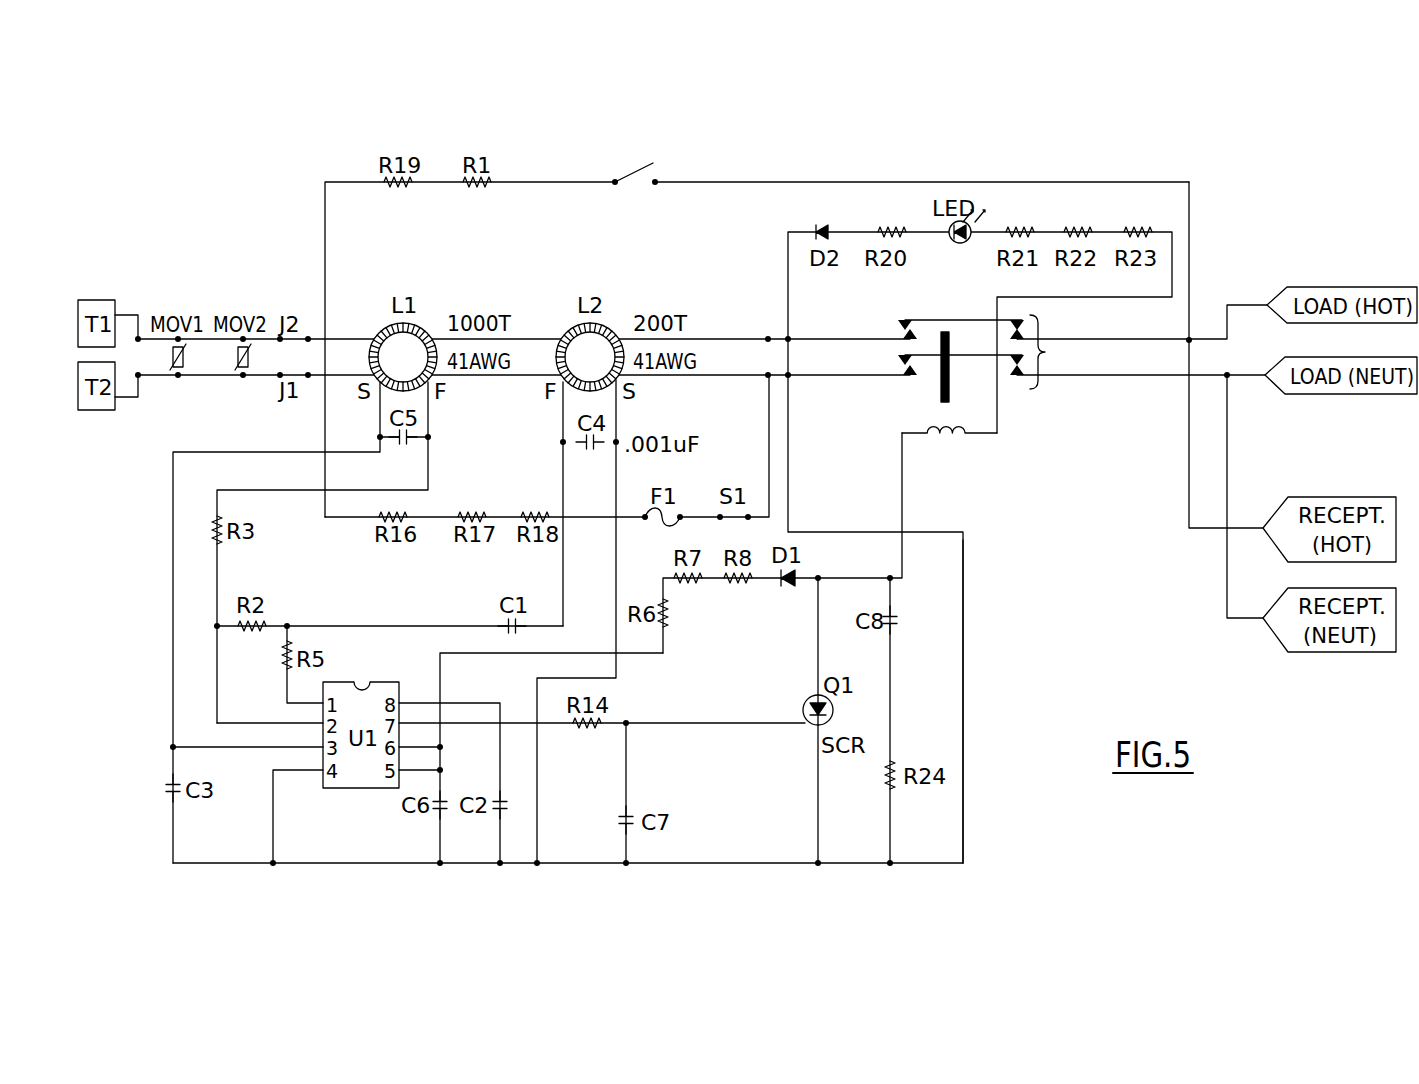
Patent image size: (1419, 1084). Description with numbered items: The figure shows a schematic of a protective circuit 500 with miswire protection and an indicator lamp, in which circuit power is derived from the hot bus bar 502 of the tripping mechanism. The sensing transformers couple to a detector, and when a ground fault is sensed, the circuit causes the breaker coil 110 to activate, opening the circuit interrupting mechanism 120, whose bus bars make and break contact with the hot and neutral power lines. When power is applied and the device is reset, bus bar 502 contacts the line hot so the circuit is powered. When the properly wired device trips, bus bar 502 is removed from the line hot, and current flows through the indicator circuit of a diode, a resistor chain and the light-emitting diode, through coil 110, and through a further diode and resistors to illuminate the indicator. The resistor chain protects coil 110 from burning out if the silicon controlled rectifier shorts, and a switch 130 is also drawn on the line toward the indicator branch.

The test switch 130 is at (634, 172).
The hot bus bar 502 is at (962, 318).
The circuit interrupting mechanism 120 is at (1045, 352).
The breaker coil 110 is at (946, 440).
The circuit 500 is at (977, 650).